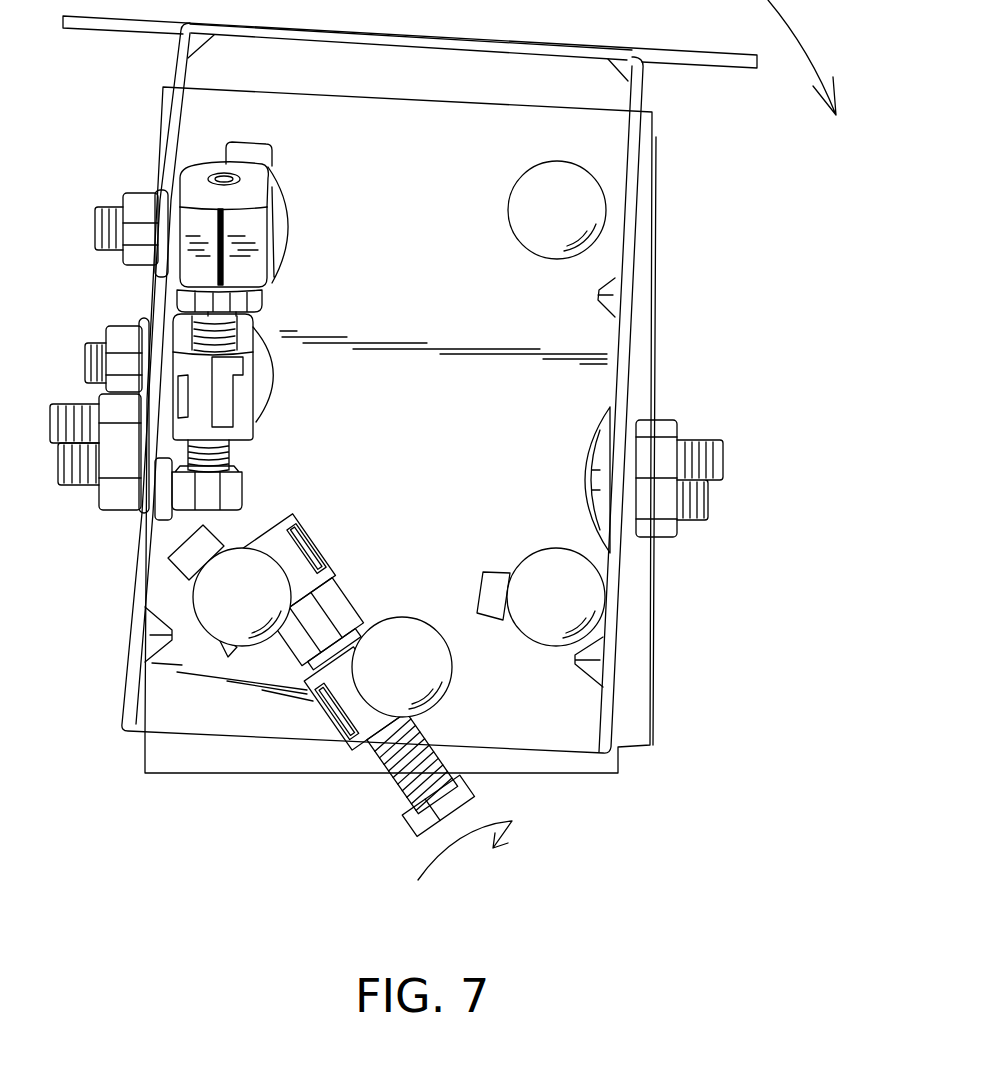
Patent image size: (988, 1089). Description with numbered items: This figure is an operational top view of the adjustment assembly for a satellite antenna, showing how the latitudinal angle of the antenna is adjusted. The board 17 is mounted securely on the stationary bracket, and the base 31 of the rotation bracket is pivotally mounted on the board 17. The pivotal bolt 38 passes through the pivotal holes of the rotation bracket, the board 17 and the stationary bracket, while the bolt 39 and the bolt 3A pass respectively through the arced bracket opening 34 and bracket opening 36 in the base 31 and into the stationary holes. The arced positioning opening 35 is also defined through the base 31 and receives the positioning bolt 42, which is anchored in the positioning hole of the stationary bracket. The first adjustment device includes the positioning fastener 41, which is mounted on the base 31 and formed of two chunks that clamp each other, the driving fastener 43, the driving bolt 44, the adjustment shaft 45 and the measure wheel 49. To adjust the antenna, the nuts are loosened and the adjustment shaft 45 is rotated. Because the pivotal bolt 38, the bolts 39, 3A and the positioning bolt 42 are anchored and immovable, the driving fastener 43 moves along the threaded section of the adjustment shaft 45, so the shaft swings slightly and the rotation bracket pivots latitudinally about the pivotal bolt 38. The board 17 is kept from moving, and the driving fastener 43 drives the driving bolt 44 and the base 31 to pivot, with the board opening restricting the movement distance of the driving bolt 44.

The board 17 is at (688, 652).
The base 31 is at (195, 706).
The bolt 3A is at (285, 200).
The bracket opening 36 is at (247, 148).
The pivotal bolt 38 is at (521, 212).
The bolt 39 is at (546, 570).
The positioning bolt 42 is at (212, 605).
The driving bolt 44 is at (428, 697).
The bracket opening 34 is at (487, 588).
The positioning opening 35 is at (183, 560).
The positioning fastener 41 is at (280, 540).
The driving fastener 43 is at (343, 690).
The measure wheel 49 is at (335, 597).
The adjustment shaft 45 is at (417, 826).